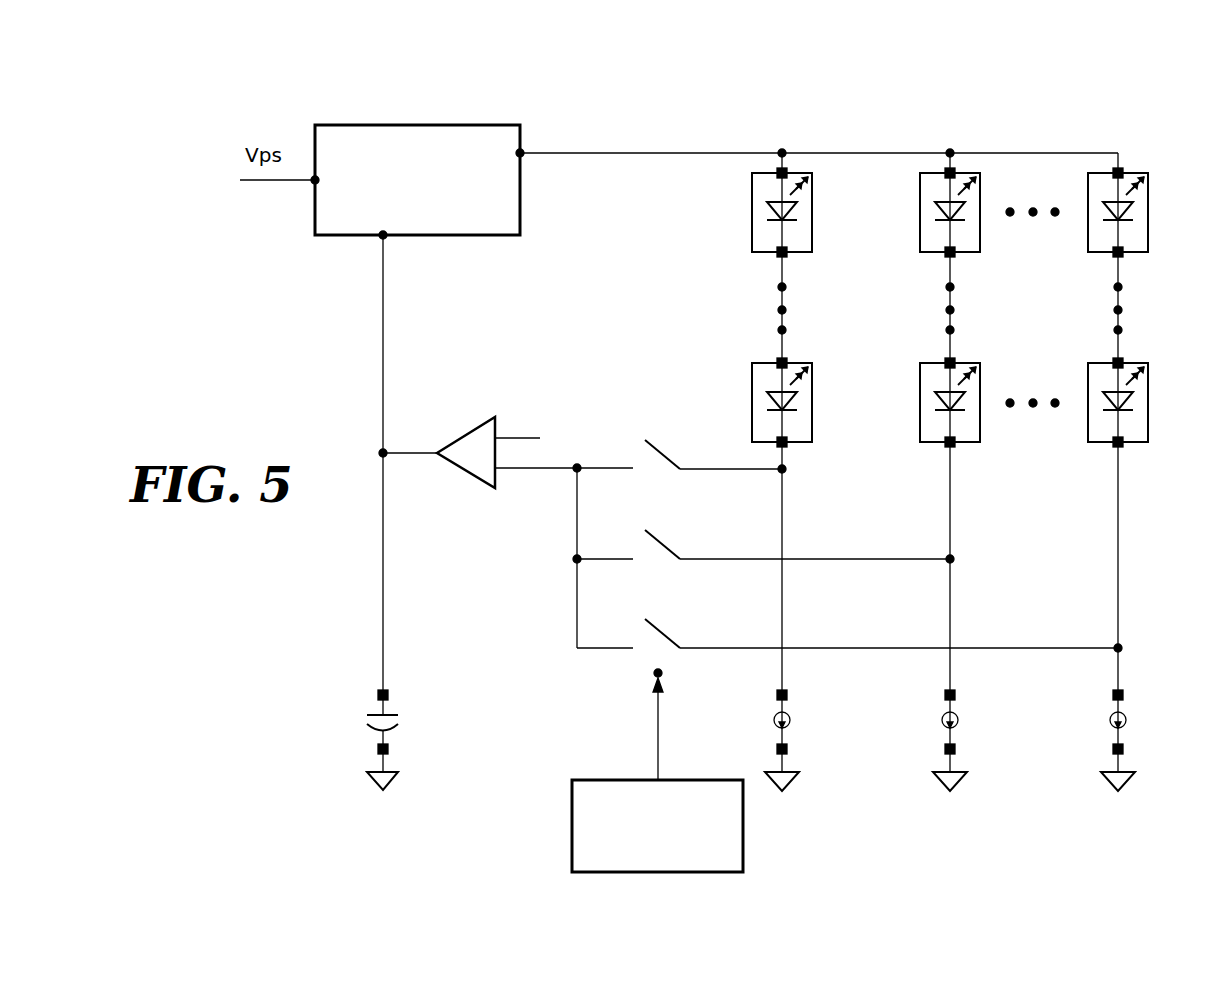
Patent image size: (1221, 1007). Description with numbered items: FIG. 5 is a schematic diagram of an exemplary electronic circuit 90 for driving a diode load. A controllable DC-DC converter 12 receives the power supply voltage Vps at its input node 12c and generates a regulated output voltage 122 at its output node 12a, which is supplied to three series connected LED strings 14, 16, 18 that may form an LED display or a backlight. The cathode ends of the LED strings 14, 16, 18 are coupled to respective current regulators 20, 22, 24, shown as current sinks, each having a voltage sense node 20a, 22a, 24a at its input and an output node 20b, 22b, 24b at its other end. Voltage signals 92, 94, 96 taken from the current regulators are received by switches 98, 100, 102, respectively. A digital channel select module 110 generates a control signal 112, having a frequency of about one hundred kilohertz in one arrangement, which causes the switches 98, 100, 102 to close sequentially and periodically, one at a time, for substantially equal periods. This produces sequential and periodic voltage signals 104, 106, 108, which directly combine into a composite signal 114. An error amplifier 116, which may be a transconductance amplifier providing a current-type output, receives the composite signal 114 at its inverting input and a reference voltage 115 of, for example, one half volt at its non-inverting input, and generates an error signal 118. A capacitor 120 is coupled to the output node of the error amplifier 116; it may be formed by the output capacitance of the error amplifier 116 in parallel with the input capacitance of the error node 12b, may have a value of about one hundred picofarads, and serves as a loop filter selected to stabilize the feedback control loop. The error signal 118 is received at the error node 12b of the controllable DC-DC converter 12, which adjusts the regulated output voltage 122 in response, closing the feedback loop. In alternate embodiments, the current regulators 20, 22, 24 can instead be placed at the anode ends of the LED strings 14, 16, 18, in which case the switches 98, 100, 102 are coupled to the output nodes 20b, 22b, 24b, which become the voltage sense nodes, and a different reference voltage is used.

The controllable DC-DC converter 12 is at (417, 180).
The output node 12a is at (522, 151).
The error node 12b is at (386, 238).
The input node 12c is at (313, 181).
The series connected LED string 14 is at (812, 252).
The series connected LED string 16 is at (980, 252).
The series connected LED string 18 is at (1148, 252).
The current regulator 20 is at (790, 718).
The voltage sense node 20a is at (788, 695).
The output node 20b is at (788, 750).
The current regulator 22 is at (958, 718).
The voltage sense node 22a is at (956, 695).
The output node 22b is at (956, 750).
The current regulator 24 is at (1126, 718).
The voltage sense node 24a is at (1124, 695).
The output node 24b is at (1124, 750).
The electronic circuit 90 is at (770, 78).
The voltage signal 92 is at (723, 467).
The voltage signal 94 is at (866, 557).
The voltage signal 96 is at (1030, 647).
The switch 98 is at (664, 452).
The switch 100 is at (660, 542).
The switch 102 is at (660, 632).
The sequential and periodic voltage signal 104 is at (607, 470).
The sequential and periodic voltage signal 106 is at (610, 560).
The sequential and periodic voltage signal 108 is at (610, 650).
The digital channel select module 110 is at (572, 808).
The control signal 112 is at (660, 742).
The composite signal 114 is at (533, 470).
The reference voltage 115 is at (513, 437).
The error amplifier 116 is at (453, 467).
The error signal 118 is at (383, 370).
The capacitor 120 is at (372, 718).
The regulated output voltage 122 is at (862, 153).